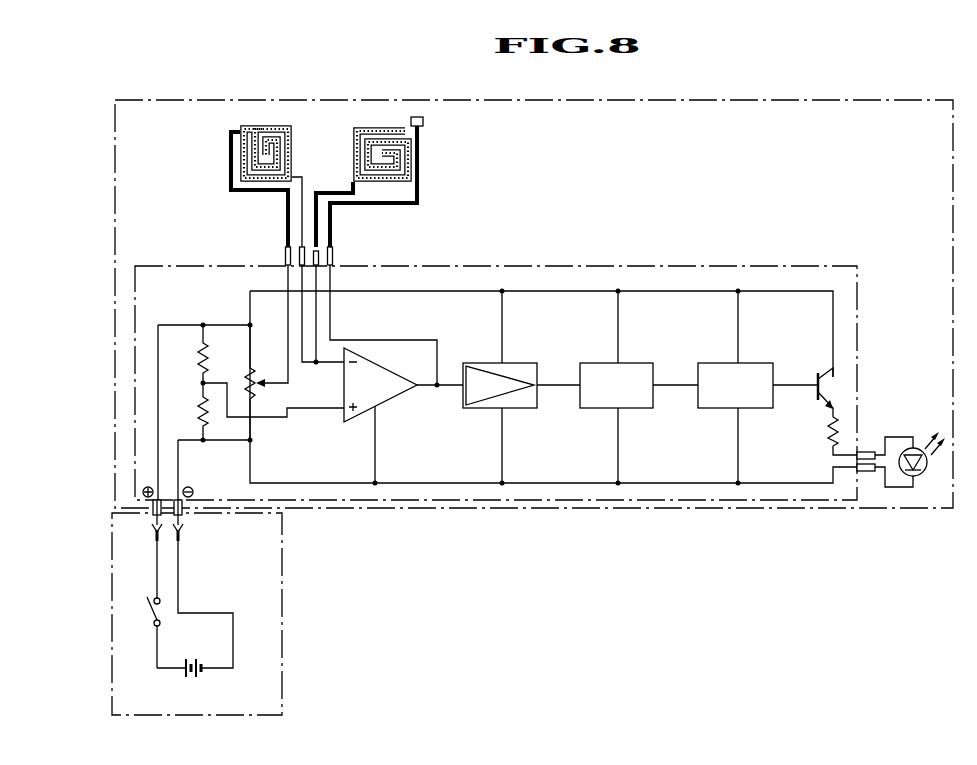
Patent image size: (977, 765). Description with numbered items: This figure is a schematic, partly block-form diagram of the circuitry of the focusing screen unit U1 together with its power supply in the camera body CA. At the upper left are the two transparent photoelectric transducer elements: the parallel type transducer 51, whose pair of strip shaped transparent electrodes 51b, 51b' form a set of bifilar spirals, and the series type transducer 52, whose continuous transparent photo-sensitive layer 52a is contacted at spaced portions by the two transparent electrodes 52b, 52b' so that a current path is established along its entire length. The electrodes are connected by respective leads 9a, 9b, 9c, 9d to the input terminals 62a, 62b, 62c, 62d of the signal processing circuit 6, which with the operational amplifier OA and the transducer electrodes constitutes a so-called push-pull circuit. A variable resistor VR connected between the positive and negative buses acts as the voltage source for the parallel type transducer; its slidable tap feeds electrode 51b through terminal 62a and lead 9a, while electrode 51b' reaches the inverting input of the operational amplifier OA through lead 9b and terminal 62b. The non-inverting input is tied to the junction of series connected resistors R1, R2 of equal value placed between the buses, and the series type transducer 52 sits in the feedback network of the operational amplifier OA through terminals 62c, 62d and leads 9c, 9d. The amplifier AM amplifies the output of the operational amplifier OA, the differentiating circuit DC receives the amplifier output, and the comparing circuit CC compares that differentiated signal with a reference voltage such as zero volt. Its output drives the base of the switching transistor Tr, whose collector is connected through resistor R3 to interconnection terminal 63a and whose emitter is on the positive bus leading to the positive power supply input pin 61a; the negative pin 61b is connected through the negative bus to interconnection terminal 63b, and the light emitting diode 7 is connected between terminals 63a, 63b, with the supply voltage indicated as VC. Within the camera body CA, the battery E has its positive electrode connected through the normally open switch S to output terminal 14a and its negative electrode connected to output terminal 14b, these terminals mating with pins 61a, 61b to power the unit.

The detecting unit U1 is at (900, 96).
The signal processing circuit 6 is at (820, 267).
The camera body CA is at (343, 578).
The first transparent photo-electric transducer element 51 is at (224, 134).
The transparent electrode 51b is at (262, 98).
The transparent electrode 51b' is at (206, 170).
The second transparent photoelectric transducer element 52 is at (340, 127).
The transparent photo-sensitive layer 52a is at (419, 170).
The transparent electrode 52b is at (333, 167).
The transparent electrode 52b' is at (447, 125).
The lead 9a is at (287, 210).
The lead 9b is at (301, 225).
The lead 9c is at (319, 211).
The lead 9d is at (333, 228).
The input terminal 62a is at (285, 250).
The input terminal 62b is at (300, 266).
The input terminal 62c is at (333, 246).
The input terminal 62d is at (333, 266).
The resistor R1 is at (194, 354).
The resistor R2 is at (194, 411).
The resistor R3 is at (833, 436).
The variable resistor VR is at (254, 374).
The operational amplifier OA is at (372, 543).
The amplifier AM is at (586, 240).
The differentiating circuit DC is at (568, 543).
The comparing circuit CC is at (713, 240).
The switching transistor Tr is at (816, 381).
The interconnection terminal 63a is at (869, 452).
The interconnection terminal 63b is at (870, 472).
The light emitting diode 7 is at (921, 472).
The supply voltage VC is at (969, 385).
The positive power supply input terminal 61a is at (155, 525).
The negative power supply input terminal 61b is at (181, 525).
The output terminal 14a is at (157, 540).
The output terminal 14b is at (180, 540).
The normally open switch S is at (152, 618).
The battery E is at (195, 624).